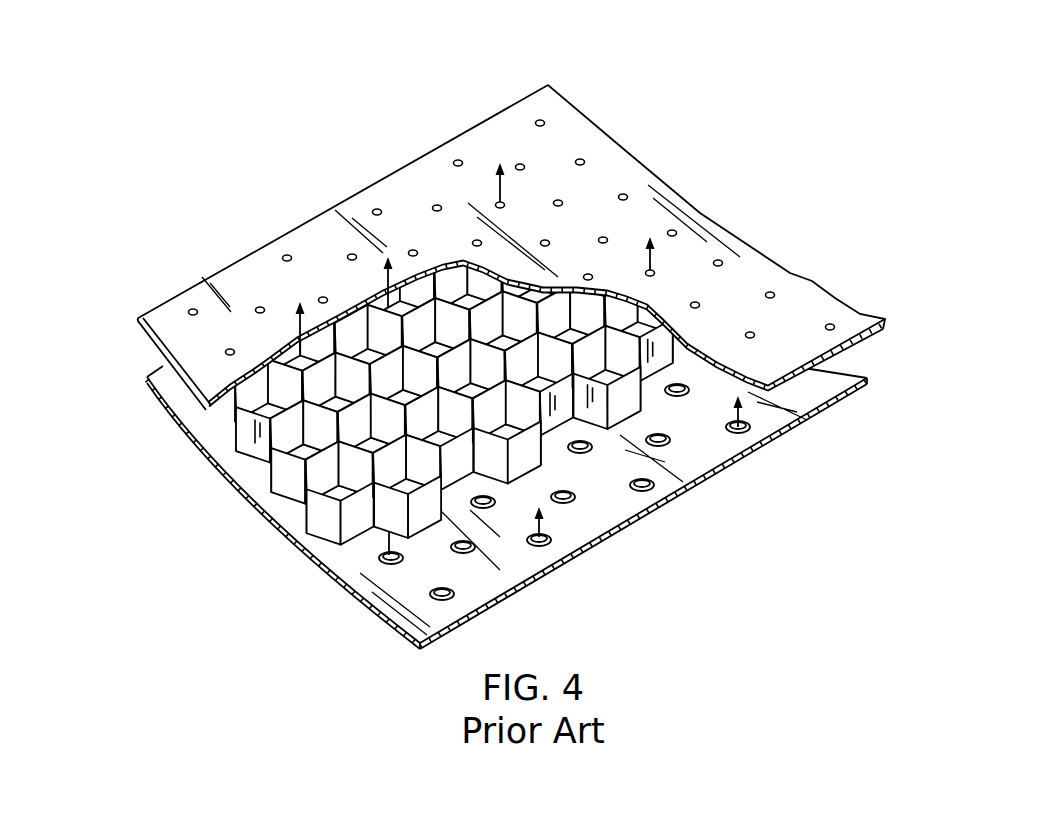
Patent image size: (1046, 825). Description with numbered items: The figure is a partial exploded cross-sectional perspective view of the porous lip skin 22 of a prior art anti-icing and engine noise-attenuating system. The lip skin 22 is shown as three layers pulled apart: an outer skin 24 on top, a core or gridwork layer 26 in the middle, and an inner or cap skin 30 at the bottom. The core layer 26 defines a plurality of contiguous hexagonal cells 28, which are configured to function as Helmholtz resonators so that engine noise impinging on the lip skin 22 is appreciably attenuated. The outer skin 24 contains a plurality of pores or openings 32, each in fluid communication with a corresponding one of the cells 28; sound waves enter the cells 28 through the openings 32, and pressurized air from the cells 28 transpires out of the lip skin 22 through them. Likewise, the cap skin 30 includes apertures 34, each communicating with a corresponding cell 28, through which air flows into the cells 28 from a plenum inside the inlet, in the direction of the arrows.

The porous lip skin 22 is at (152, 425).
The outer skin 24 is at (173, 333).
The core or gridwork layer 26 is at (313, 528).
The hexagonal cells 28 is at (516, 582).
The inner or cap skin 30 is at (247, 473).
The pores or openings 32 is at (518, 164).
The apertures 34 is at (440, 596).